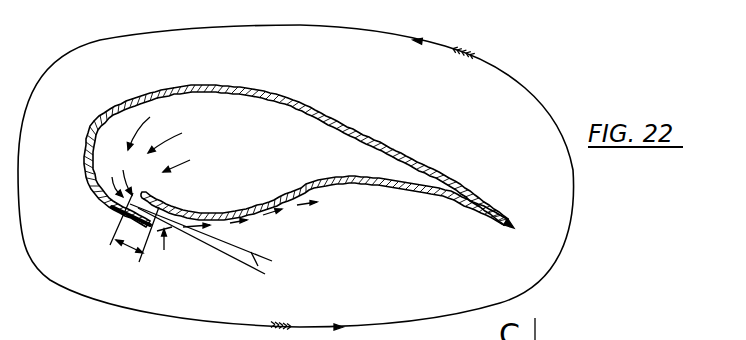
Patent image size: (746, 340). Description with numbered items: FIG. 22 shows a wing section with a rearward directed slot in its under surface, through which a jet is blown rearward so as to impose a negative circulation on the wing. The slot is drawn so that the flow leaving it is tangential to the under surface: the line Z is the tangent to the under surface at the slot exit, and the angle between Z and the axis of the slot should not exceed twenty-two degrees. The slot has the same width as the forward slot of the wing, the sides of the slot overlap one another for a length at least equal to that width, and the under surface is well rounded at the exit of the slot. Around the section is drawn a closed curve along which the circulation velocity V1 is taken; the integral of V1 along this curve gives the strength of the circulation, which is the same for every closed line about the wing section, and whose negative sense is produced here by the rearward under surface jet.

The circulation velocity V1 is at (307, 315).
The tangent to the under surface Z is at (275, 261).